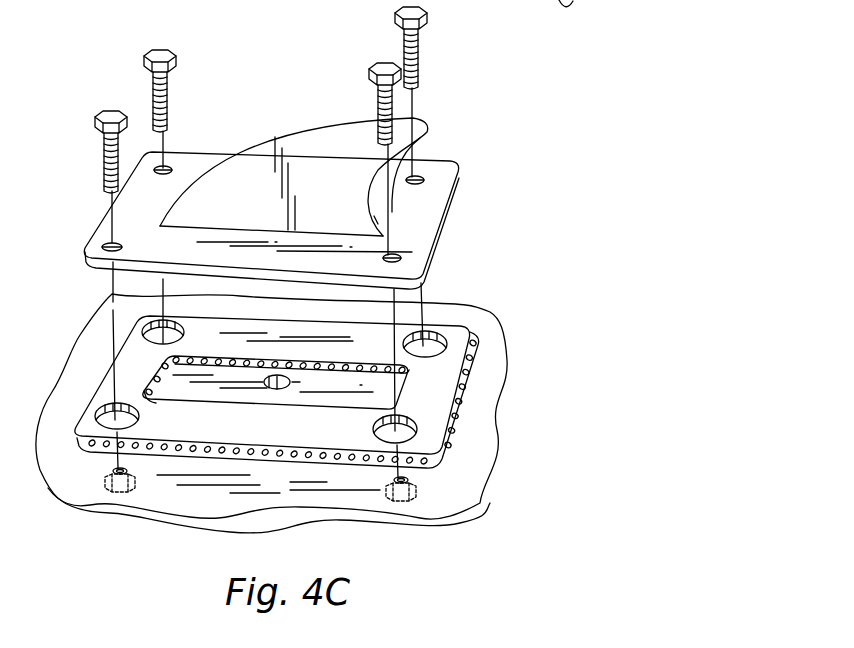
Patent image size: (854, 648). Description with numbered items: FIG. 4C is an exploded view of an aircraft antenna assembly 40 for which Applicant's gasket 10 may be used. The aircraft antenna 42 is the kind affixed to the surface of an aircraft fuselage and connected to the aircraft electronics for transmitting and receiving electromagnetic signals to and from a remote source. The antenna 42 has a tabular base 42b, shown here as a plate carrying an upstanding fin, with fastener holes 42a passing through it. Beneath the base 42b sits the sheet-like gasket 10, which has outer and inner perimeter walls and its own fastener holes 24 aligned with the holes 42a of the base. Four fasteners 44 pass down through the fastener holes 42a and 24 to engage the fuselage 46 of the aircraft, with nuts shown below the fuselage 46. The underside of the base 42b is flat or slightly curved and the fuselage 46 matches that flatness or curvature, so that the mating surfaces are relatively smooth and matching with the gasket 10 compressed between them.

The gasket 10 is at (465, 415).
The fastener holes 24 is at (423, 328).
The aircraft antenna assembly 40 is at (463, 122).
The aircraft antenna 42 is at (463, 183).
The fastener holes 42a is at (423, 173).
The base 42b is at (447, 228).
The fasteners 44 is at (420, 67).
The fuselage 46 is at (430, 523).